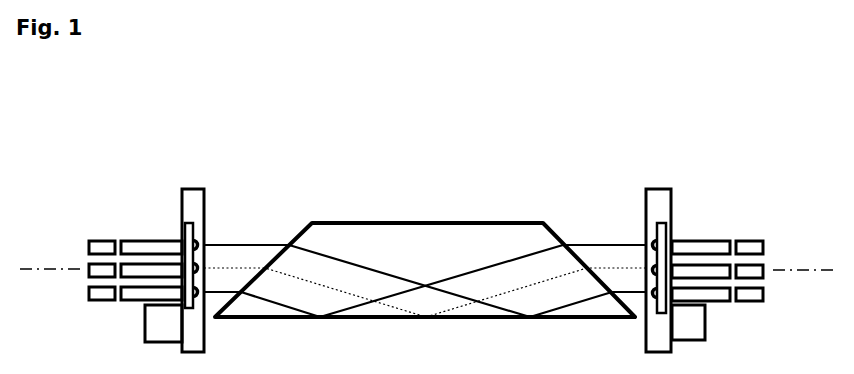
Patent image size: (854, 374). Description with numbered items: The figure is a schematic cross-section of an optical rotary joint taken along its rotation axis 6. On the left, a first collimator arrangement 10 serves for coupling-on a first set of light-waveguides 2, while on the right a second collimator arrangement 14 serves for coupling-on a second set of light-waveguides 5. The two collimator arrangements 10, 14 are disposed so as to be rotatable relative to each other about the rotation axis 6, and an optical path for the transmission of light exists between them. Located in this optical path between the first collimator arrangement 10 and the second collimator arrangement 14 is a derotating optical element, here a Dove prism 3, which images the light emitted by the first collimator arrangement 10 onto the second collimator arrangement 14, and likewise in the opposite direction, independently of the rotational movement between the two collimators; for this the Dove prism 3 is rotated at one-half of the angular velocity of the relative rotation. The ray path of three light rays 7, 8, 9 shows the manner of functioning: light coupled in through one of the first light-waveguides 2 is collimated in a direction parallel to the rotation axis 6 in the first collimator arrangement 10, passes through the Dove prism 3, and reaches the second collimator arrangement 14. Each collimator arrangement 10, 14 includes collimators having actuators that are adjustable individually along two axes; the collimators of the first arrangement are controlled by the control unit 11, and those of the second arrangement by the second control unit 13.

The first set of light-waveguides 2 is at (90, 240).
The Dove prism 3 is at (520, 210).
The second set of light-waveguides 5 is at (715, 225).
The rotation axis 6 is at (65, 280).
The light ray 7 is at (212, 242).
The light ray 8 is at (225, 265).
The light ray 9 is at (230, 287).
The first collimator arrangement 10 is at (188, 182).
The control unit 11 is at (163, 323).
The second control unit 13 is at (688, 322).
The second collimator arrangement 14 is at (655, 175).